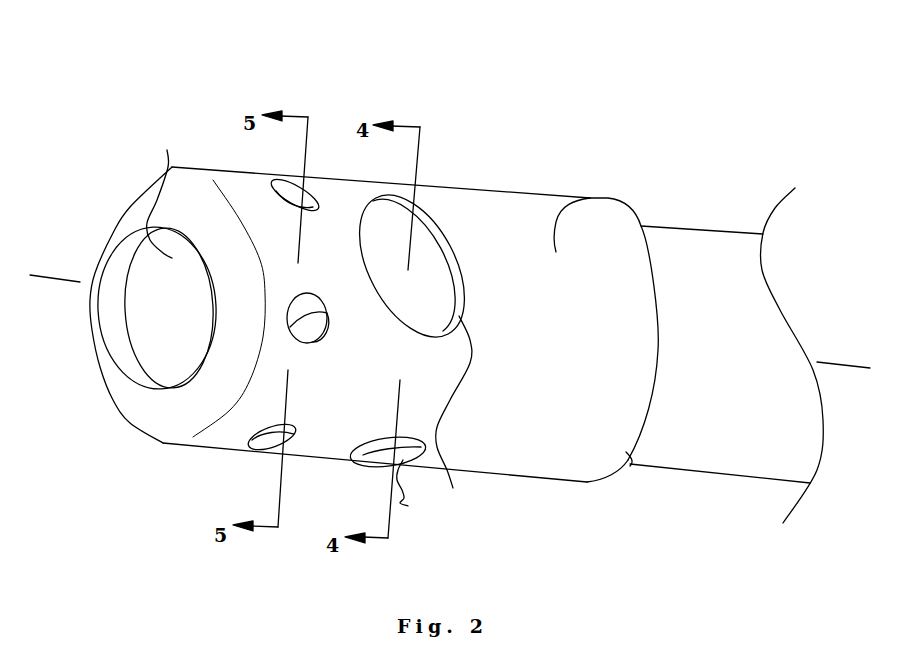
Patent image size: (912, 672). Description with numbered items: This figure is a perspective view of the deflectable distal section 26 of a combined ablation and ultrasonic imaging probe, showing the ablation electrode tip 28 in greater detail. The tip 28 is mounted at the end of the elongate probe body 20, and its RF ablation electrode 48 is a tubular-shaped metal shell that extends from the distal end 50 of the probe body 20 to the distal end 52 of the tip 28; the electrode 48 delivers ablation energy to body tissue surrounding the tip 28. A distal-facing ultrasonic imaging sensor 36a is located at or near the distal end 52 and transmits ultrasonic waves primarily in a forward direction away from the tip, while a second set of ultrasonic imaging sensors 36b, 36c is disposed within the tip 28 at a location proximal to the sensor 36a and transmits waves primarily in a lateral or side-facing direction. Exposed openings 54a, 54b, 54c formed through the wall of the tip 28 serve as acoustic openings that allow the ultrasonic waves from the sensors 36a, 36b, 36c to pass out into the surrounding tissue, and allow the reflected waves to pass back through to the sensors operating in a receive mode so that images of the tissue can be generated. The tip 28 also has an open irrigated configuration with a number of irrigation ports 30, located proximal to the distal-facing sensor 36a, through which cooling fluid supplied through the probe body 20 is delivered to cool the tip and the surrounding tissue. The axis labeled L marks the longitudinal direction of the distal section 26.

The elongate probe body 20 is at (718, 447).
The deflectable distal section 26 is at (437, 105).
The ablation electrode tip 28 is at (612, 88).
The irrigation ports 30 is at (303, 205).
The distal-facing ultrasonic imaging sensor 36a is at (150, 315).
The ultrasonic imaging sensor 36b is at (432, 253).
The ultrasonic imaging sensor 36c is at (381, 462).
The RF ablation electrode 48 is at (590, 198).
The distal end of the probe body 50 is at (632, 470).
The distal end of the tip 52 is at (134, 211).
The acoustic opening 54a is at (164, 191).
The acoustic opening 54b is at (455, 415).
The acoustic opening 54c is at (412, 492).
The longitudinal axis L is at (50, 278).